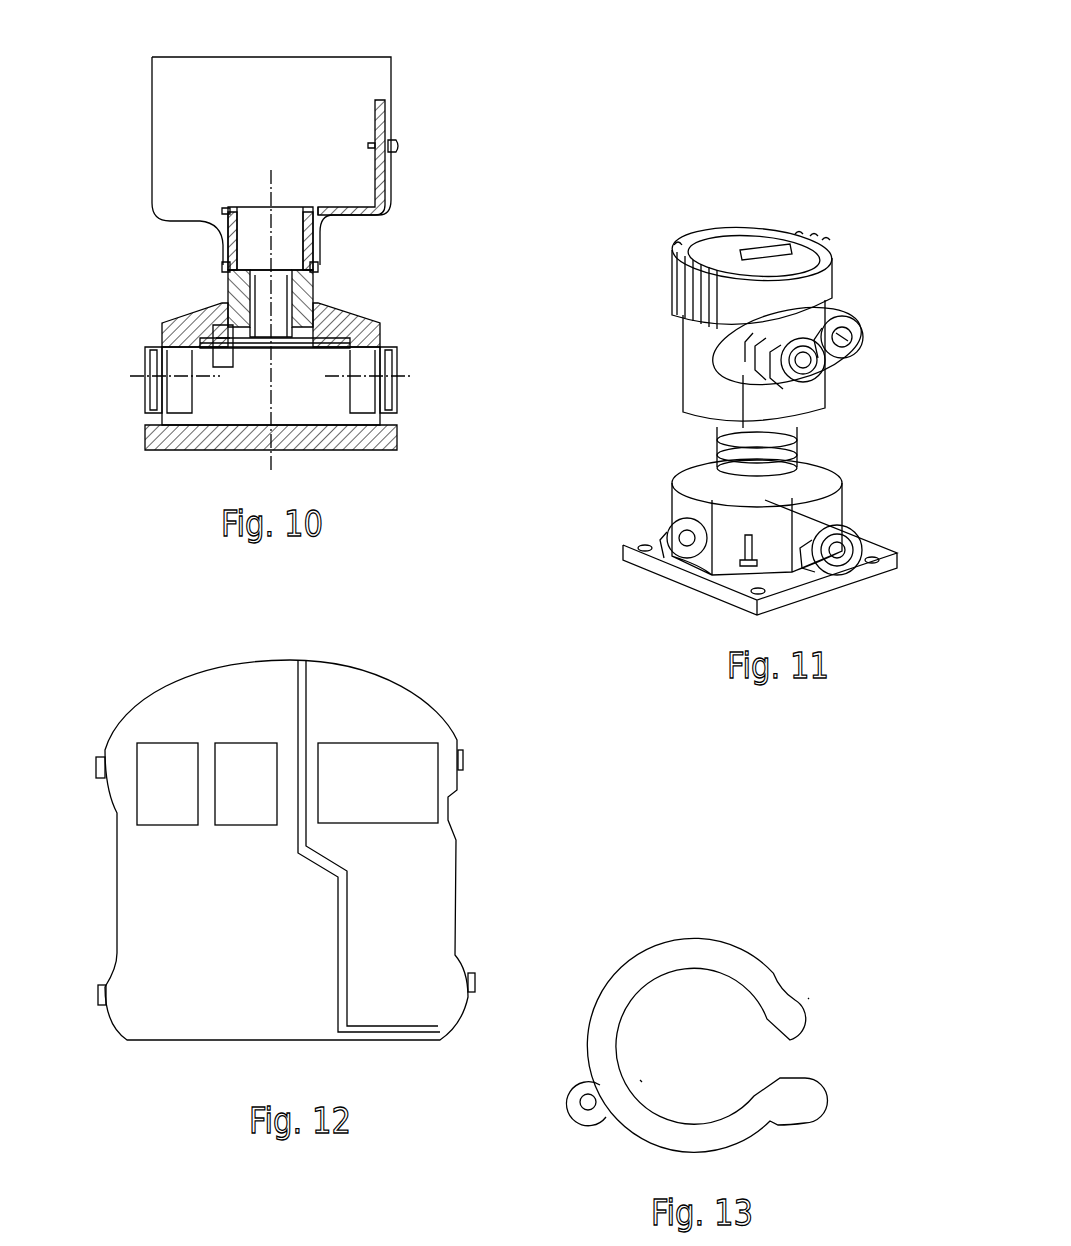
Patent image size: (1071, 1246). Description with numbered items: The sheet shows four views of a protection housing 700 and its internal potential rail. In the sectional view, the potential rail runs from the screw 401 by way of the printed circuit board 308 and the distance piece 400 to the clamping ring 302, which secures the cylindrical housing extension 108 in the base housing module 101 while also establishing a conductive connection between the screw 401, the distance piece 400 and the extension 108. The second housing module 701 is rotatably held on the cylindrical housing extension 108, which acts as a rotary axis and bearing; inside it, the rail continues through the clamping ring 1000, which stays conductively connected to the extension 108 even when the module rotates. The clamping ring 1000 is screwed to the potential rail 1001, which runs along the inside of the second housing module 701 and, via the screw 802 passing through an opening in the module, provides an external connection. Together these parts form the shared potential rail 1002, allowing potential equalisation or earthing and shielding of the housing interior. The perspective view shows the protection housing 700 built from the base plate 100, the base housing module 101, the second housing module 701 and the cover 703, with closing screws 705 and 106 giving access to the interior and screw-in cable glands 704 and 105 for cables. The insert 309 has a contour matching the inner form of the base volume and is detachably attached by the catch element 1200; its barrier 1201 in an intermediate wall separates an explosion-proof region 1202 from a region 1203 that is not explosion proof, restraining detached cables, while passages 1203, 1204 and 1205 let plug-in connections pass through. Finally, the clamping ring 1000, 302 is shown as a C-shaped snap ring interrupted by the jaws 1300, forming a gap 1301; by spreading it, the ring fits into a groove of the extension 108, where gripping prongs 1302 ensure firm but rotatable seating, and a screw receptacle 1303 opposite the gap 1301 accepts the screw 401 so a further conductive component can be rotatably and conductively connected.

In FIG. 11, the base plate 100 is at (668, 581).
In FIG. 10, the base housing module 101 is at (360, 302).
In FIG. 11, the base housing module 101 is at (688, 472).
In FIG. 11, the screw-in cable gland 105 is at (846, 524).
In FIG. 11, the closing screw 106 is at (672, 526).
In FIG. 10, the cylindrical housing extension 108 is at (222, 266).
In FIG. 10, the clamping ring 302 is at (218, 286).
In FIG. 13, the clamping ring 302 is at (703, 1054).
In FIG. 10, the printed circuit board 308 is at (296, 352).
In FIG. 12, the insert 309 is at (300, 816).
In FIG. 10, the distance piece 400 is at (192, 310).
In FIG. 10, the screw 401 is at (224, 368).
In FIG. 11, the protection housing 700 is at (752, 391).
In FIG. 10, the second housing module 701 is at (150, 156).
In FIG. 11, the second housing module 701 is at (686, 358).
In FIG. 11, the cover 703 is at (820, 282).
In FIG. 11, the screw-in cable gland 704 is at (814, 382).
In FIG. 11, the closing screw 705 is at (842, 358).
In FIG. 10, the screw lead-through 802 is at (400, 143).
In FIG. 10, the clamping ring 1000 is at (224, 205).
In FIG. 13, the clamping ring 1000 is at (720, 1024).
In FIG. 10, the potential rail 1001 is at (331, 205).
In FIG. 10, the shared potential rail 1002 is at (361, 112).
In FIG. 12, the catch element 1200 is at (468, 761).
In FIG. 12, the barrier 1201 is at (312, 690).
In FIG. 12, the explosion-proof region 1202 is at (117, 901).
In FIG. 12, the region that is not explosion proof 1203 is at (360, 745).
In FIG. 12, the passage 1204 is at (245, 812).
In FIG. 12, the passage 1205 is at (170, 812).
In FIG. 12, the jaws 1300 is at (478, 986).
In FIG. 13, the jaws 1300 is at (812, 1013).
In FIG. 13, the gap 1301 is at (812, 1066).
In FIG. 13, the gripping prongs 1302 is at (765, 1021).
In FIG. 13, the screw receptacle 1303 is at (578, 1119).